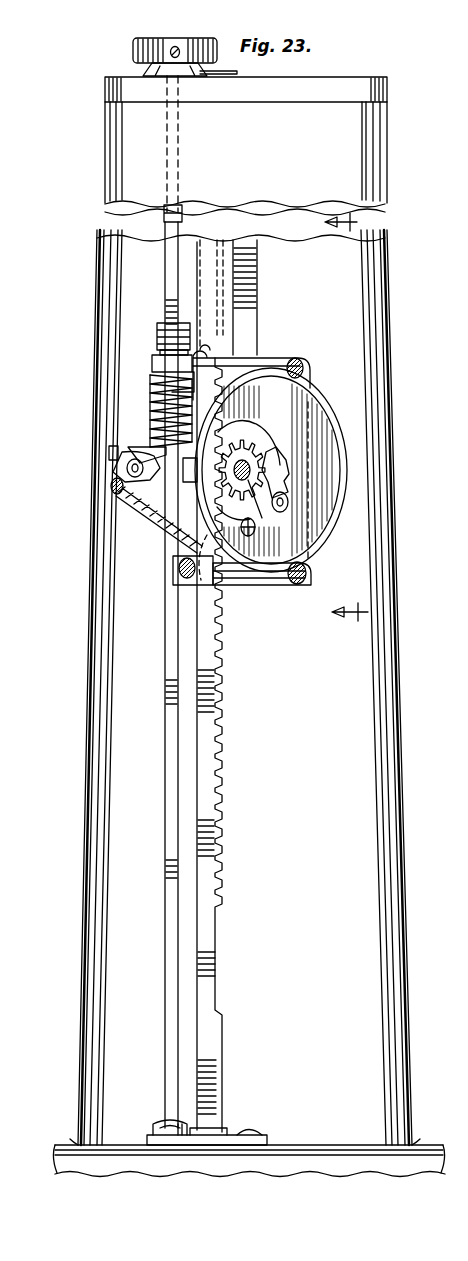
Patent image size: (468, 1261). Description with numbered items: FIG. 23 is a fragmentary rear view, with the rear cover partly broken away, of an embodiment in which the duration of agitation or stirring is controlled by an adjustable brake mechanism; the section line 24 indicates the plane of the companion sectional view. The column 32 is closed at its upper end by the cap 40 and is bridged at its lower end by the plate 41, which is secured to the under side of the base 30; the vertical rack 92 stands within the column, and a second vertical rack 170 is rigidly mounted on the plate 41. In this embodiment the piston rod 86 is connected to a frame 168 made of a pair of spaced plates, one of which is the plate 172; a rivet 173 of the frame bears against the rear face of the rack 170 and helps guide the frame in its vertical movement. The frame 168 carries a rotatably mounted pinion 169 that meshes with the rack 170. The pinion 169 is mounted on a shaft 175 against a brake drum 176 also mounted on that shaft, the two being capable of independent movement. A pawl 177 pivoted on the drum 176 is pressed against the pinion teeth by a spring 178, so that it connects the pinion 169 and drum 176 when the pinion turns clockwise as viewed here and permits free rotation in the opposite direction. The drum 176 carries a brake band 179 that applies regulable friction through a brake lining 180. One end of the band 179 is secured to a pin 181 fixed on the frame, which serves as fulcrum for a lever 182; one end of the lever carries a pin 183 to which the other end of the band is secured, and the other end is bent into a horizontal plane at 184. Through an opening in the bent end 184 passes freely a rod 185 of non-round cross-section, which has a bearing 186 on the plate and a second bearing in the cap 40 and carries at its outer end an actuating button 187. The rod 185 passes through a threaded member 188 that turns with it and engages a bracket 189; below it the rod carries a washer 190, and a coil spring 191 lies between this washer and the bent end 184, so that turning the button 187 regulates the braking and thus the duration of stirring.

The actuating button 187 is at (172, 38).
The cap 40 is at (382, 81).
The column 32 is at (381, 153).
The piston rod 86 is at (183, 212).
The section line arrows 24 is at (354, 429).
The rod 185 is at (170, 272).
The vertical rack 92 is at (247, 278).
The vertical rack 170 is at (210, 700).
The threaded member 188 is at (162, 323).
The bracket 189 is at (168, 344).
The washer 190 is at (158, 372).
The coil spring 191 is at (160, 403).
The frame 168 is at (286, 356).
The plate 172 is at (303, 368).
The brake band 179 is at (336, 517).
The brake lining 180 is at (260, 584).
The brake drum 176 is at (306, 575).
The rivet 173 is at (178, 580).
The pinion 169 is at (247, 452).
The spring 178 is at (243, 438).
The pawl 177 is at (284, 457).
The shaft 175 is at (256, 516).
The pin 181 is at (108, 472).
The lever 182 is at (112, 456).
The pin 183 is at (112, 491).
The bent end 184 is at (110, 440).
The bearing 186 is at (157, 1124).
The plate 41 is at (326, 1132).
The base 30 is at (402, 1164).